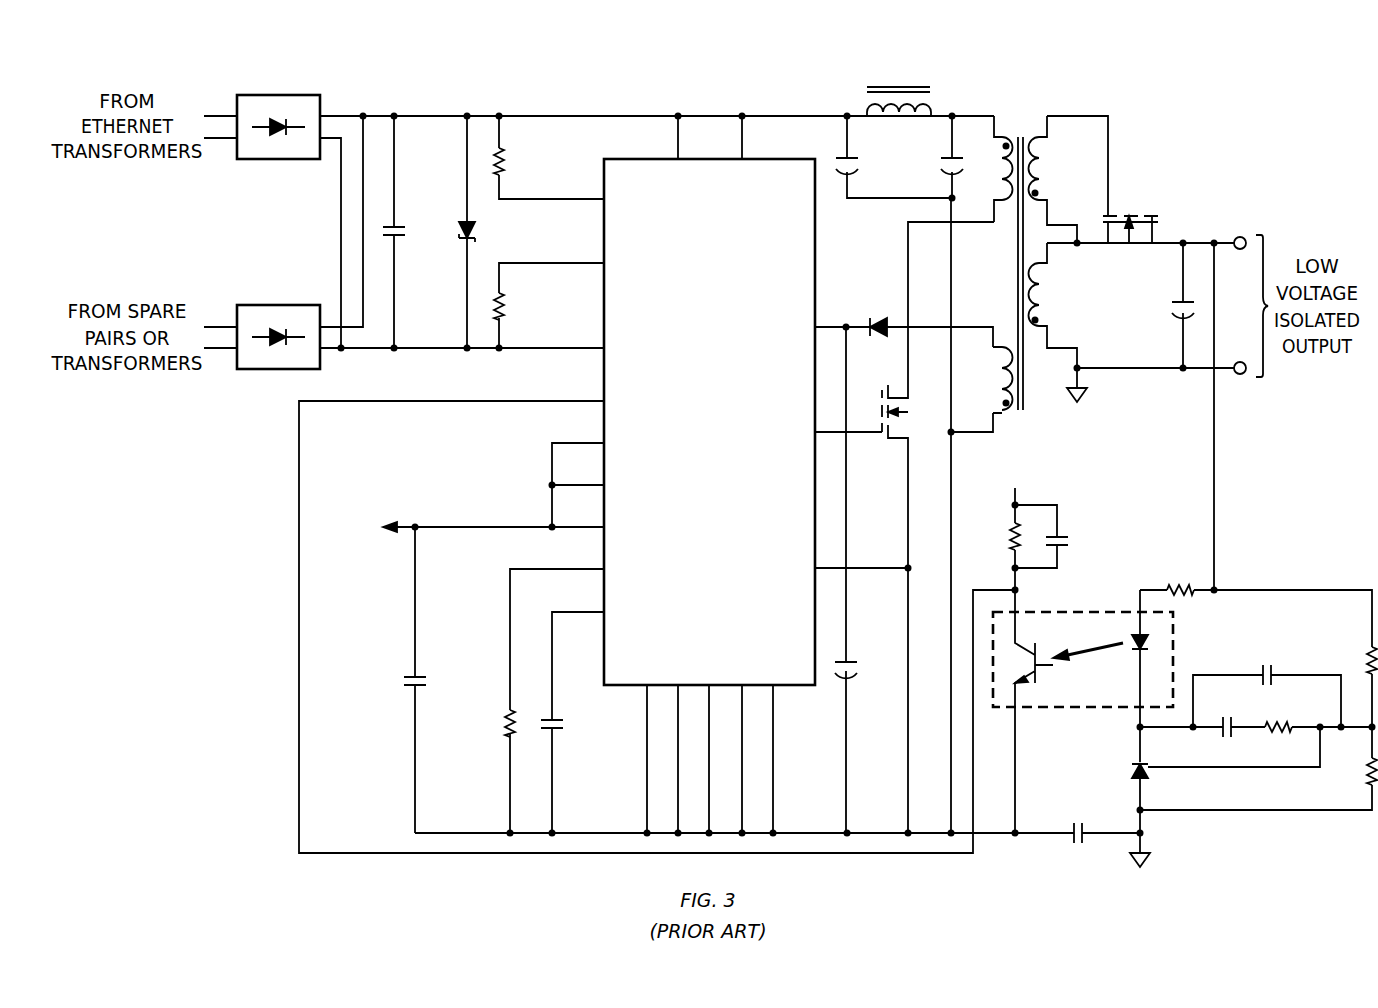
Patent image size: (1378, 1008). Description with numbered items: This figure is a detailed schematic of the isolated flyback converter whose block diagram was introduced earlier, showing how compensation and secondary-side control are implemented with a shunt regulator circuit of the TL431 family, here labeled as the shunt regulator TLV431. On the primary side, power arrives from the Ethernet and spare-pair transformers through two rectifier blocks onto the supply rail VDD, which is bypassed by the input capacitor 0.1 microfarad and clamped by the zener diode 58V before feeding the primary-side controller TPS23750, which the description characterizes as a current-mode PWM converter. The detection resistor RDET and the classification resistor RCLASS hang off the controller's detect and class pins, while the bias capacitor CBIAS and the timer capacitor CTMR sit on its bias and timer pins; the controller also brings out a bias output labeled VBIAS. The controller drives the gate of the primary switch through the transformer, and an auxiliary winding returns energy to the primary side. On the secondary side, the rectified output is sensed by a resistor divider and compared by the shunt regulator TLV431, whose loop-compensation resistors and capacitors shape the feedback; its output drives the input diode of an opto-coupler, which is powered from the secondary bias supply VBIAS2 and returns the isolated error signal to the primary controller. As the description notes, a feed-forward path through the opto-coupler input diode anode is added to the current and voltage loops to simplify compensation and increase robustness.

The PoE powered device controller IC TPS23750 is at (709, 474).
The adjustable shunt regulator circuit TLV431 is at (1173, 815).
The 0.1 uF input capacitor 0.1 is at (411, 232).
The 58V zener diode 58V is at (489, 232).
The detection resistor RDET is at (549, 157).
The classification resistor RCLASS is at (549, 305).
The bias capacitor CBIAS is at (440, 680).
The timer capacitor CTMR is at (576, 731).
The VDD supply node VDD is at (375, 99).
The bias voltage output VBIAS is at (350, 521).
The bias voltage supply for optocoupler VBIAS2 is at (1010, 472).